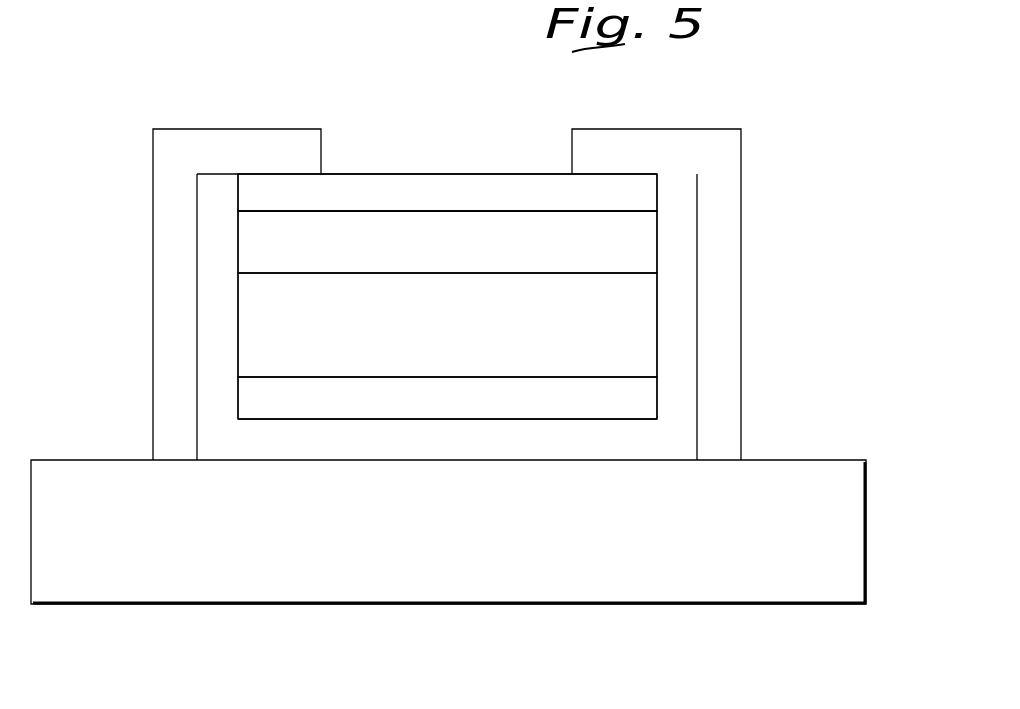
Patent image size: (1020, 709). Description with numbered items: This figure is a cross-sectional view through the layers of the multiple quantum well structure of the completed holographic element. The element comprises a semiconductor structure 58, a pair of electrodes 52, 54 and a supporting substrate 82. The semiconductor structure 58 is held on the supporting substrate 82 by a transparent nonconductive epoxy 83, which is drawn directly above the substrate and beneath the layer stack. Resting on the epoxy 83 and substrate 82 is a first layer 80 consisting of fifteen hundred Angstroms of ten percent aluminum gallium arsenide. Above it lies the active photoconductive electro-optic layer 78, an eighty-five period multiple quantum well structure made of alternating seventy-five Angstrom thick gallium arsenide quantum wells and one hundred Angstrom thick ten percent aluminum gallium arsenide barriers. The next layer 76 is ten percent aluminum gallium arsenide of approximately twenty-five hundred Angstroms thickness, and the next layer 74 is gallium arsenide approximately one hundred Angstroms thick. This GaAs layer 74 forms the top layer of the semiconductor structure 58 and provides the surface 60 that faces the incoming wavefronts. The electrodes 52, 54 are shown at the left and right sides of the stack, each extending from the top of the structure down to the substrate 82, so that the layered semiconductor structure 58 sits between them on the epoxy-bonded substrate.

The electrode 52 is at (211, 129).
The electrode 54 is at (676, 129).
The semiconductor structure 58 is at (461, 152).
The surface 60 is at (392, 174).
The GaAs layer 74 is at (467, 205).
The aluminum gallium arsenide layer 76 is at (500, 258).
The active photoconductive electro-optic layer 78 is at (623, 330).
The first layer 80 is at (494, 413).
The supporting substrate 82 is at (448, 532).
The epoxy 83 is at (447, 437).